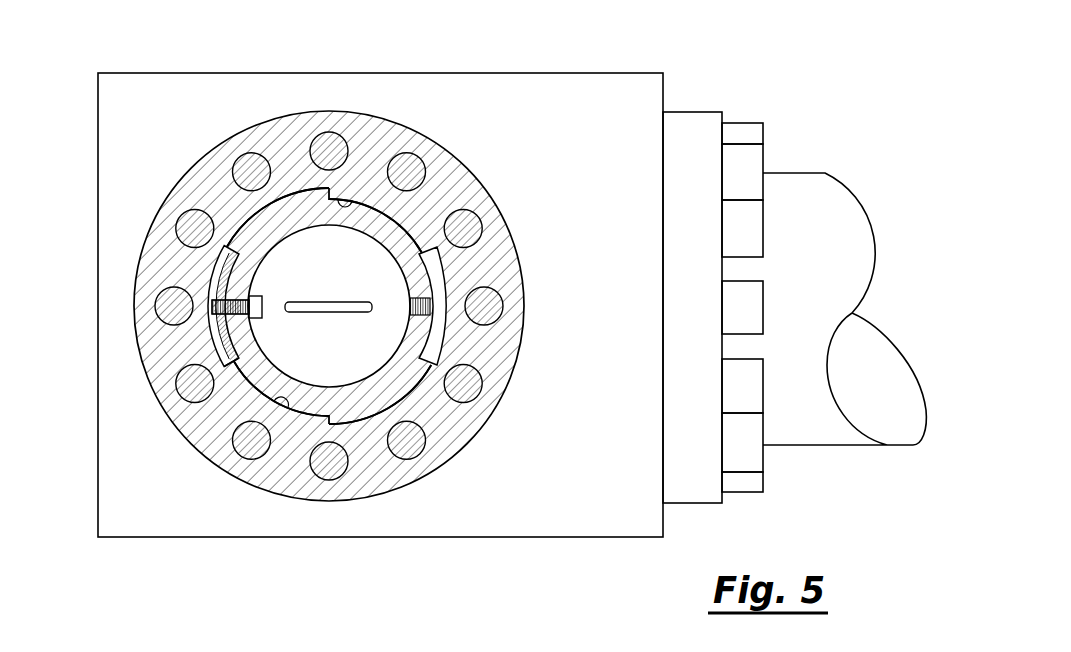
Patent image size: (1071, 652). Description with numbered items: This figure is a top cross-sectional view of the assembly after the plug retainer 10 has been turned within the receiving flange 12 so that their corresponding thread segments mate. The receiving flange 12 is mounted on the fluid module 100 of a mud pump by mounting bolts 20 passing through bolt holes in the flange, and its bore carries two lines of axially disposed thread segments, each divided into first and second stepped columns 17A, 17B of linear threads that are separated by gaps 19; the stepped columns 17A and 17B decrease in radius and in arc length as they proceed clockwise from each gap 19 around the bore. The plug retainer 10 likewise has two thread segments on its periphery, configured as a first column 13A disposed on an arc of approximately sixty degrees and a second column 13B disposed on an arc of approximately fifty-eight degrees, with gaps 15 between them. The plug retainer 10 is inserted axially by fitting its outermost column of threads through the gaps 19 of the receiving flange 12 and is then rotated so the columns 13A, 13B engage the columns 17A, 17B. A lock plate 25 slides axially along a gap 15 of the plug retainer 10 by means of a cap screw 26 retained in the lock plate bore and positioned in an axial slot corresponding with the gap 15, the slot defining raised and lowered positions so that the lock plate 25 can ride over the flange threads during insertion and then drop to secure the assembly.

The fluid module 100 is at (615, 265).
The plug retainer 10 is at (390, 377).
The receiving flange 12 is at (286, 126).
The first column of threads 13A is at (190, 165).
The second column of threads 13B is at (418, 252).
The gap 15 is at (227, 283).
The first stepped column of threads 17A is at (450, 270).
The second stepped column of threads 17B is at (290, 195).
The gap 19 is at (358, 193).
The mounting bolt 20 is at (413, 162).
The lock plate 25 is at (238, 352).
The cap screw 26 is at (213, 307).